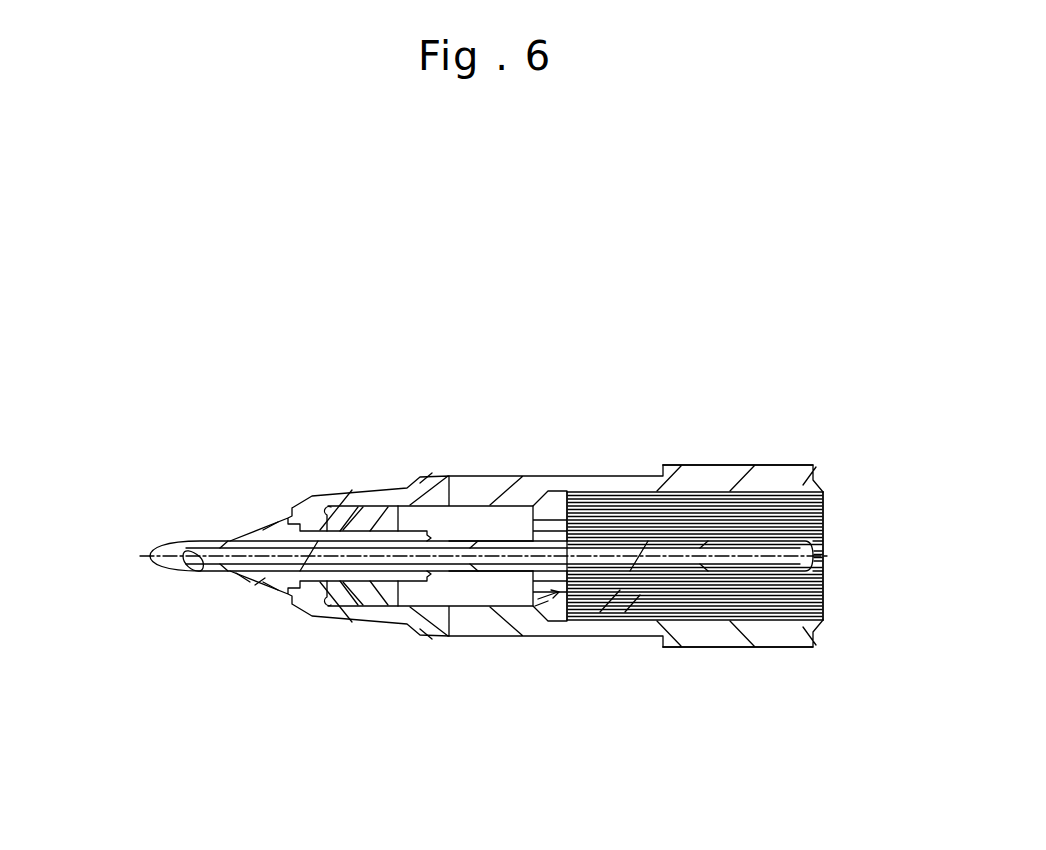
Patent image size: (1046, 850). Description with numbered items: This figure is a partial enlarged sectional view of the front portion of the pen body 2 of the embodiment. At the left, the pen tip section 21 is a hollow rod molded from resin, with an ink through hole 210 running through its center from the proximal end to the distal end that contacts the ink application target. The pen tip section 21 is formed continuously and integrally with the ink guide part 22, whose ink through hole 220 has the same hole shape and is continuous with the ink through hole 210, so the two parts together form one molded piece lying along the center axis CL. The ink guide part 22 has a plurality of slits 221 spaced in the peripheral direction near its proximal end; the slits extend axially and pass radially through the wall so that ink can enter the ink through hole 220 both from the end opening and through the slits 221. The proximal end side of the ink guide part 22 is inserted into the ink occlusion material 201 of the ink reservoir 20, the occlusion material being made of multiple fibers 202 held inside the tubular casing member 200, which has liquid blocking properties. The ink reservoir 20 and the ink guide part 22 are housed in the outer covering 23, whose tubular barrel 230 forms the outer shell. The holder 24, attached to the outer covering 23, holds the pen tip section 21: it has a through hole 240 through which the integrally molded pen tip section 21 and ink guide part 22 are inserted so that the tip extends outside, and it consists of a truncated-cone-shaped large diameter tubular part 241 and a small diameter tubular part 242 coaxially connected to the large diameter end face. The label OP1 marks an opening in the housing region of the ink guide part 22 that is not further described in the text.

The pen body 2 is at (758, 197).
The pen tip section 21 is at (190, 538).
The ink through hole 210 is at (182, 563).
The holder 24 is at (442, 246).
The large diameter tubular part 241 is at (258, 527).
The small diameter tubular part 242 is at (338, 509).
The through hole 240 is at (260, 566).
The ink guide part 22 is at (442, 500).
The ink through hole 220 is at (456, 553).
The opening OP1 is at (540, 608).
The ink reservoir 20 is at (538, 246).
The ink occlusion material 201 is at (611, 462).
The casing member 200 is at (680, 490).
The fibers 202 is at (632, 606).
The outer covering 23 is at (753, 465).
The barrel 230 is at (738, 556).
The slits 221 is at (823, 575).
The center axis CL is at (140, 556).